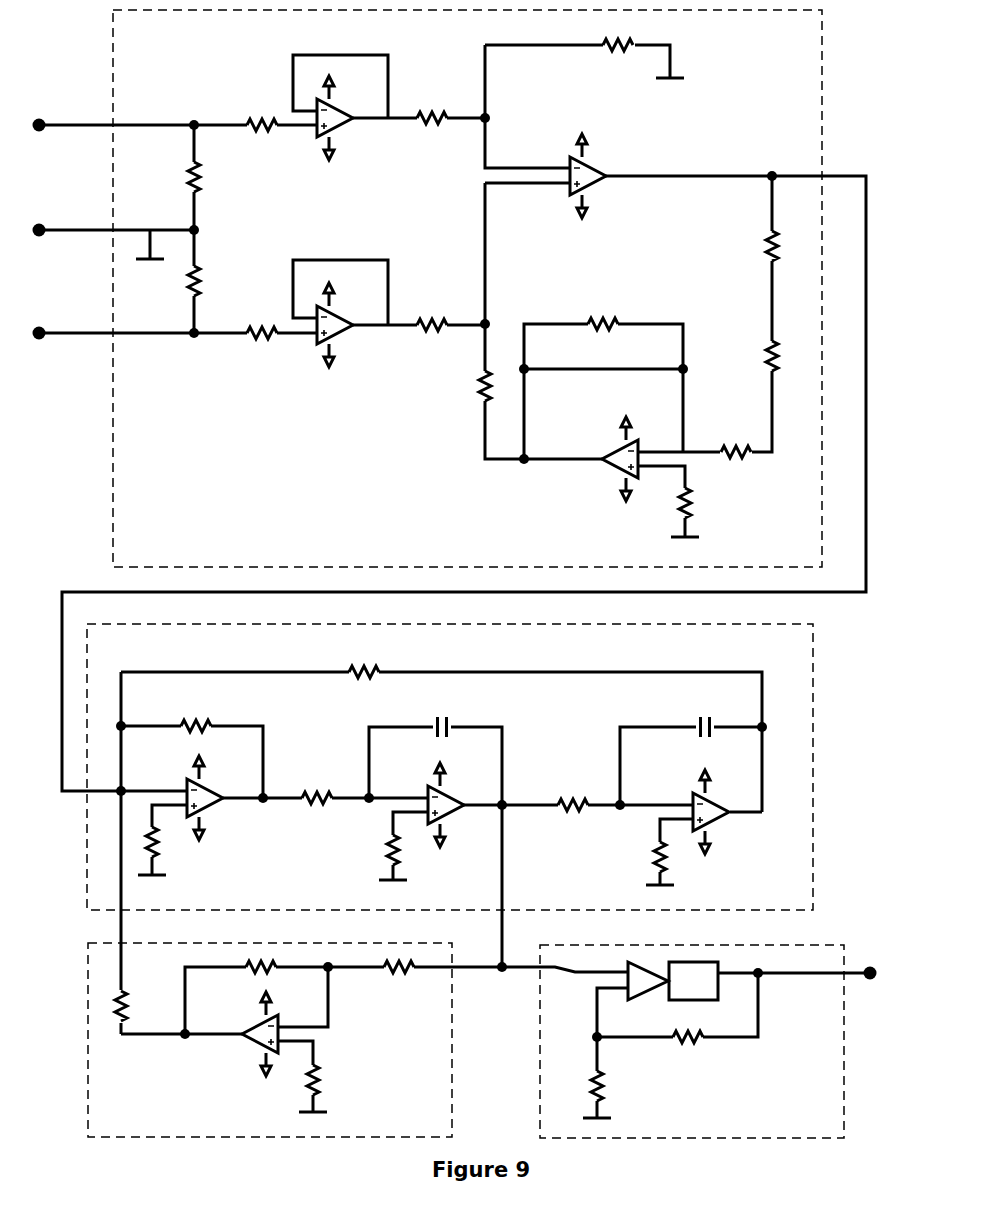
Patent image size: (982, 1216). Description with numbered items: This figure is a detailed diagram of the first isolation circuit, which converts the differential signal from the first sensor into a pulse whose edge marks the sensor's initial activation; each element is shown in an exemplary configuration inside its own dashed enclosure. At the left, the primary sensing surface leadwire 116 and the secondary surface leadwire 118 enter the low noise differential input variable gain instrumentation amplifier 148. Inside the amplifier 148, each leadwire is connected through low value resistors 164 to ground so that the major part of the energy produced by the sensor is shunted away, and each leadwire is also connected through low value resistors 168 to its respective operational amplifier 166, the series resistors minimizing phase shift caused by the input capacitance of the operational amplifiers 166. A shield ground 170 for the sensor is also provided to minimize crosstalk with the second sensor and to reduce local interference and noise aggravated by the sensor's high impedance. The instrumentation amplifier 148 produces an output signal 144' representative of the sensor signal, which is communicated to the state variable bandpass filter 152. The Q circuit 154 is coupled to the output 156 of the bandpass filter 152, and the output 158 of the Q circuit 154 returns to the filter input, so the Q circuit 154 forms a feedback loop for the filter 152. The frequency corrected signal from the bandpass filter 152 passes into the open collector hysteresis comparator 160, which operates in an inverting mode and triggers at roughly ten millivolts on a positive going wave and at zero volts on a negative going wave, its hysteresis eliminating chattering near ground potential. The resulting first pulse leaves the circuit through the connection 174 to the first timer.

The primary sensing surface leadwire 116 is at (114, 115).
The secondary surface leadwire 118 is at (114, 323).
The shield ground 170 is at (114, 232).
The low value resistors 164 is at (210, 229).
The low value resistors 168 is at (255, 231).
The operational amplifiers 166 is at (355, 211).
The low noise differential input variable gain instrumentation amplifier 148 is at (428, 288).
The output signal 144' is at (471, 468).
The state variable bandpass filter 152 is at (450, 767).
The output of bandpass filter 156 is at (526, 886).
The output of Q circuit 158 is at (143, 972).
The Q circuit 154 is at (295, 1040).
The open collector hysteresis comparator 160 is at (692, 1041).
The connection 174 is at (829, 959).